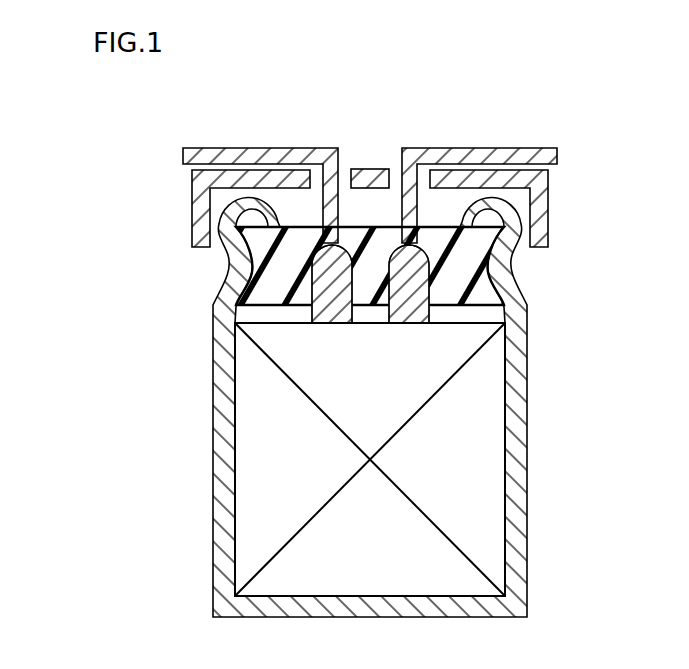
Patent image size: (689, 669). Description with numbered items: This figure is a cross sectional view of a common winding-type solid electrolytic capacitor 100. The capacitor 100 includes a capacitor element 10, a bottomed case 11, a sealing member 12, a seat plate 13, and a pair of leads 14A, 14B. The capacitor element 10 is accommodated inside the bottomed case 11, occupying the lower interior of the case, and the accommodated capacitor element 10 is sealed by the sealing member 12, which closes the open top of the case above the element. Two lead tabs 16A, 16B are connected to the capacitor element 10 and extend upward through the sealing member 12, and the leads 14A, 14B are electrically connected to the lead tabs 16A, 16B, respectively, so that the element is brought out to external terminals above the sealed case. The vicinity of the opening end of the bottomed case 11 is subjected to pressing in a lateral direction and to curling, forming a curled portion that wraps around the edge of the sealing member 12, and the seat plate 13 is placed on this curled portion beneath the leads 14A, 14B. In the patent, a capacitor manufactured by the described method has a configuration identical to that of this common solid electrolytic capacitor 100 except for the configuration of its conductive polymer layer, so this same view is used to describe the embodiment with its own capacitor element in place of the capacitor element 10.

The solid electrolytic capacitor 100 is at (429, 62).
The capacitor element 10 is at (272, 440).
The bottomed case 11 is at (520, 408).
The sealing member 12 is at (462, 273).
The seat plate 13 is at (193, 193).
The lead 14A is at (257, 148).
The lead 14B is at (487, 148).
The lead tab 16A is at (330, 287).
The lead tab 16B is at (412, 295).